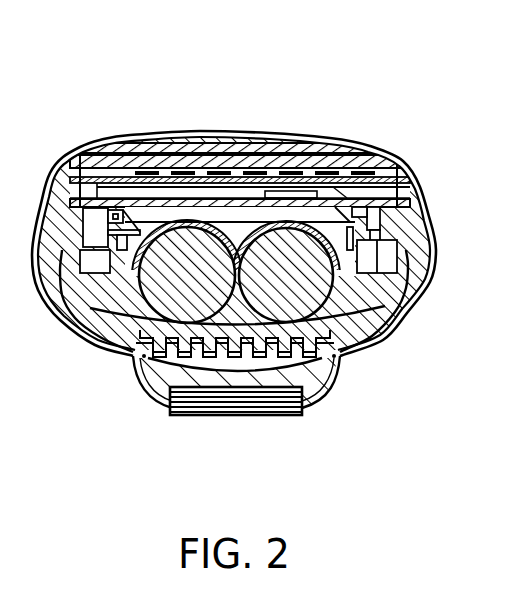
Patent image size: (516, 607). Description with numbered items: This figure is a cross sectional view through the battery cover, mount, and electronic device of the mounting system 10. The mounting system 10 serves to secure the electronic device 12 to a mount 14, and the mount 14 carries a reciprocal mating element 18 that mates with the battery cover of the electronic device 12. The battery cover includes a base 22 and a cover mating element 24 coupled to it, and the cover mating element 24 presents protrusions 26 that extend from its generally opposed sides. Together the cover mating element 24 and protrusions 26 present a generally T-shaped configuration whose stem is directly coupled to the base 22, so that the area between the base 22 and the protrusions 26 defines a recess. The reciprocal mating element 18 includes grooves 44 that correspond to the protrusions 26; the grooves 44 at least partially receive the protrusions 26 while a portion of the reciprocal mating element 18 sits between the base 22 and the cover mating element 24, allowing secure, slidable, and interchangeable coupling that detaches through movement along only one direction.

The mounting system 10 is at (121, 61).
The electronic device 12 is at (258, 188).
The mount 14 is at (252, 407).
The reciprocal mating element 18 is at (332, 383).
The base 22 is at (140, 352).
The cover mating element 24 is at (303, 385).
The protrusions 26 is at (397, 326).
The grooves 44 is at (138, 361).